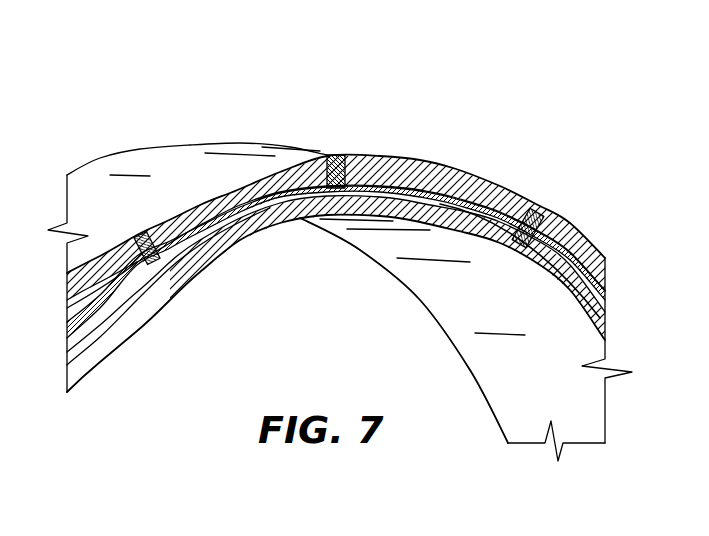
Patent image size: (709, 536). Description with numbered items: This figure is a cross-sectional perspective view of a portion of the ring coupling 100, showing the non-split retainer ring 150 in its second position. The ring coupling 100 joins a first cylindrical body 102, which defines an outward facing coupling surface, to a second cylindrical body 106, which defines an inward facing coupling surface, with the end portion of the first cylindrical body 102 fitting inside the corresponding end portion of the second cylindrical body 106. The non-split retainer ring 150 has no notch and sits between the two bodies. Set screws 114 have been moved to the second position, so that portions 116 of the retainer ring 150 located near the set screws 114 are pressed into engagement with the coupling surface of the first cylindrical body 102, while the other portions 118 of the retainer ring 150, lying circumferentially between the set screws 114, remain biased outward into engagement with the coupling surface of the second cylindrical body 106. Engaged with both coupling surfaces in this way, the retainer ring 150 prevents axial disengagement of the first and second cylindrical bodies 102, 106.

The ring coupling 100 is at (578, 78).
The first cylindrical body 102 is at (105, 180).
The second cylindrical body 106 is at (480, 195).
The set screws 114 is at (143, 233).
The portions of retainer ring proximate the set screws 116 is at (575, 213).
The other portions of retainer ring 118 is at (449, 152).
The non-split retainer ring 150 is at (276, 190).